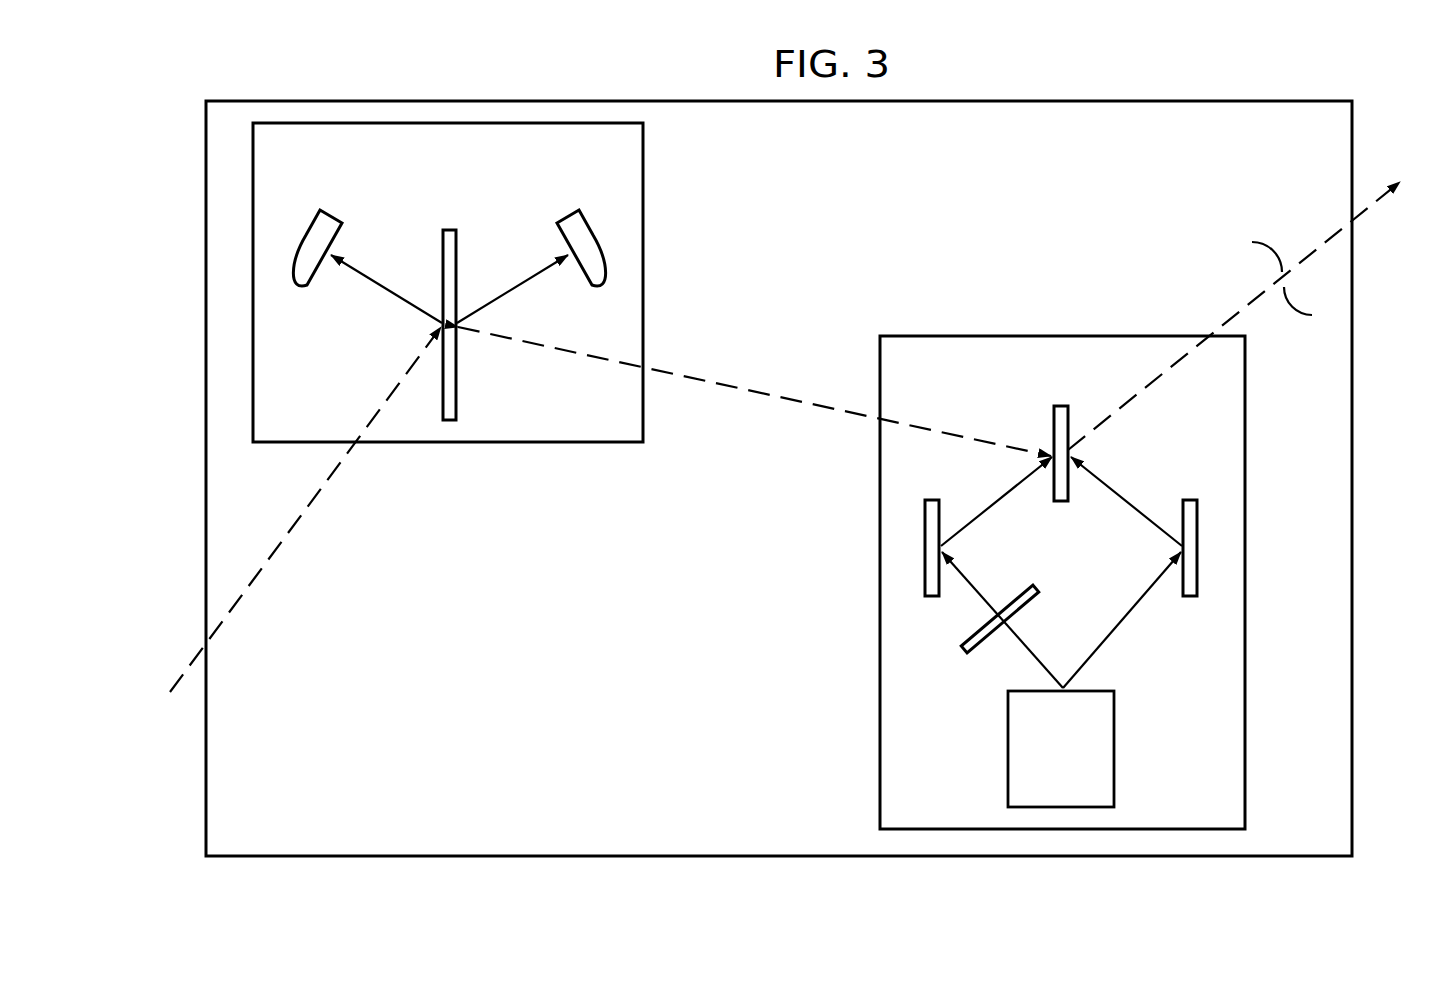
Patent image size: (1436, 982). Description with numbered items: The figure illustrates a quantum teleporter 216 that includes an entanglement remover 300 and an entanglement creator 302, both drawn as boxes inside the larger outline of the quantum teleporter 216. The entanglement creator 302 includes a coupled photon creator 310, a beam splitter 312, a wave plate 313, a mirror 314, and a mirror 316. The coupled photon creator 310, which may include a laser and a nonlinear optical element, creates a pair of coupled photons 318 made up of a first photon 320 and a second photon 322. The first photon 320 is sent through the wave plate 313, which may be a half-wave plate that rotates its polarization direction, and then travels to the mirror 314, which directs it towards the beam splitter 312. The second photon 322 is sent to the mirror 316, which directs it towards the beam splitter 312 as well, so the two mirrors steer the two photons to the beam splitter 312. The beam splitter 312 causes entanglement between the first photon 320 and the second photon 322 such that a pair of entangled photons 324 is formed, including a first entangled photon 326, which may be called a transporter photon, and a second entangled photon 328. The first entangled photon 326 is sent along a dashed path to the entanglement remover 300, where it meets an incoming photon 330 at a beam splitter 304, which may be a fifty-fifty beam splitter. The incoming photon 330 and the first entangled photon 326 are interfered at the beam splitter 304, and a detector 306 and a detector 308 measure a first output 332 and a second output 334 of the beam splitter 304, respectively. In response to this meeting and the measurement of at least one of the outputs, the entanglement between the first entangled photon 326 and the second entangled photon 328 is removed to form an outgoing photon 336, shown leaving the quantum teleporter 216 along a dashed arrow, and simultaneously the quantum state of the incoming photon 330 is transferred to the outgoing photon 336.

The quantum teleporter 216 is at (900, 211).
The entanglement remover 300 is at (646, 258).
The entanglement creator 302 is at (878, 609).
The beam splitter 304 is at (448, 228).
The detector 306 is at (318, 208).
The detector 308 is at (581, 208).
The coupled photon creator 310 is at (1084, 765).
The beam splitter 312 is at (1064, 404).
The wave plate 313 is at (1014, 598).
The mirror 314 is at (932, 498).
The mirror 316 is at (1195, 498).
The pair of coupled photons 318 is at (1020, 668).
The first photon 320 is at (1054, 675).
The second photon 322 is at (1128, 615).
The pair of entangled photons 324 is at (1029, 428).
The first entangled photon 326 is at (749, 388).
The second entangled photon 328 is at (1242, 308).
The incoming photon 330 is at (312, 500).
The first output 332 is at (365, 275).
The second output 334 is at (531, 275).
The outgoing photon 336 is at (1333, 235).